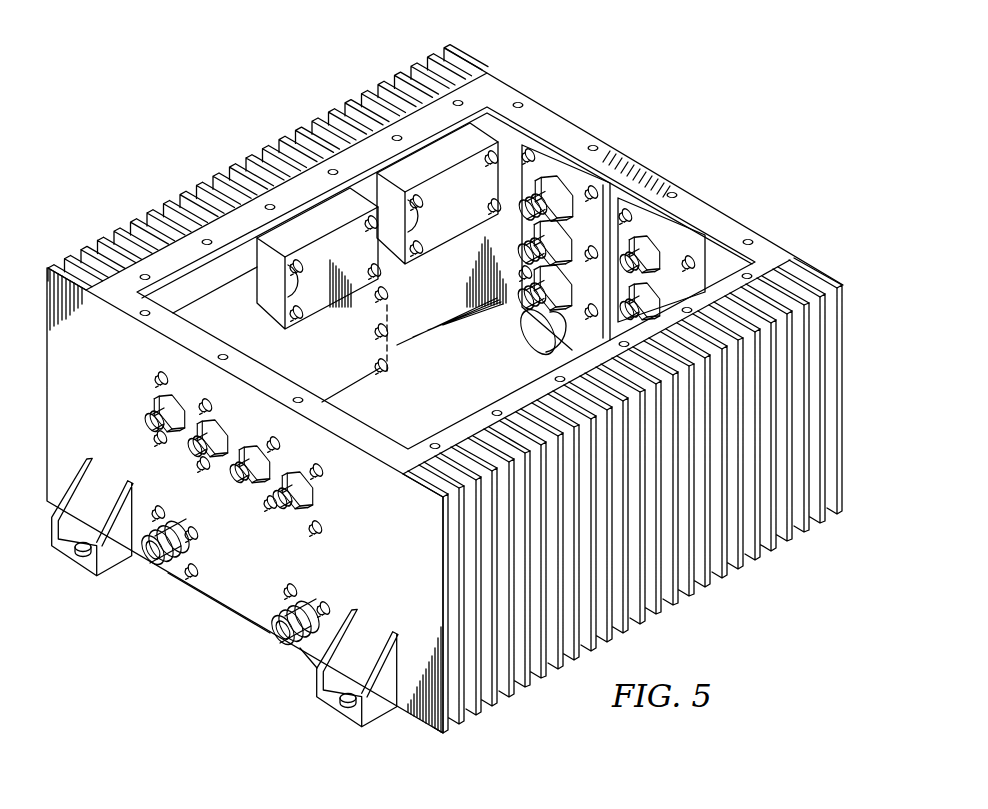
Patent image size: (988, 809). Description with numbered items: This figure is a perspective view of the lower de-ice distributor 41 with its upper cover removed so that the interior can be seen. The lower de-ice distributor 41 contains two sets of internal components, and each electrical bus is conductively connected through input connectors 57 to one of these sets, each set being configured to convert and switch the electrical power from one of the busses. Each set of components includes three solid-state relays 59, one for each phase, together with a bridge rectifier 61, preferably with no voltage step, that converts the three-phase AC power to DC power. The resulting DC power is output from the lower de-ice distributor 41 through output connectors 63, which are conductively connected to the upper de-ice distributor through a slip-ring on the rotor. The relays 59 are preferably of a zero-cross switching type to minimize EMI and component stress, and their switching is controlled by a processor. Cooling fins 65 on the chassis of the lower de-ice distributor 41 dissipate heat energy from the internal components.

The lower de-ice distributor 41 is at (658, 86).
The input connectors 57 is at (553, 168).
The solid-state relays 59 is at (433, 233).
The bridge rectifier 61 is at (340, 378).
The output connectors 63 is at (152, 417).
The cooling fins 65 is at (840, 398).